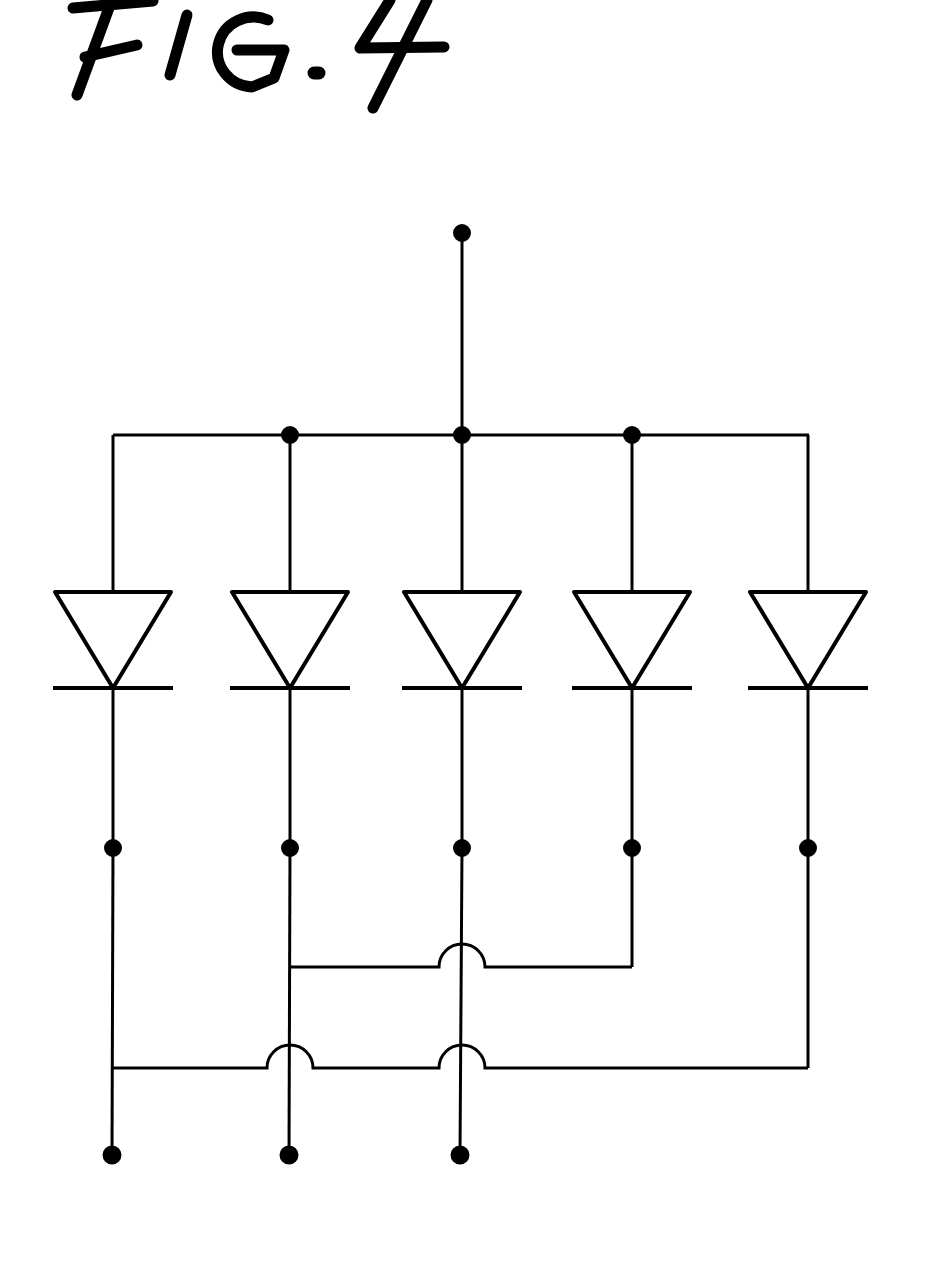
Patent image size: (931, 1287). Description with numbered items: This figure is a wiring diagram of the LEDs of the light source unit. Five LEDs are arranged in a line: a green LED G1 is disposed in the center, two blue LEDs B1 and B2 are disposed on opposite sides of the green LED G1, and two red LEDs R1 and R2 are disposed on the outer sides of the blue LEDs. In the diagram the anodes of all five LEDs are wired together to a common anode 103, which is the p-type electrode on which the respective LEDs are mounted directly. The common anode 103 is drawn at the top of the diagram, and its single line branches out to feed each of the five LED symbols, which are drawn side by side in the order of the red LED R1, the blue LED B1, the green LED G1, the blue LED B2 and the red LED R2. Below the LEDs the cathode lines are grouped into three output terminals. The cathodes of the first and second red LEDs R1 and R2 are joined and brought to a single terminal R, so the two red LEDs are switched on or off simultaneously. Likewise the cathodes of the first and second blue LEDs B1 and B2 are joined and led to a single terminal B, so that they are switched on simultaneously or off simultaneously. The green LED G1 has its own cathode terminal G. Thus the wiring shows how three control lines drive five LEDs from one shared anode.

The common anode 103 is at (619, 329).
The first red LED R1 is at (102, 645).
The first blue LED B1 is at (278, 645).
The green LED G1 is at (452, 645).
The second blue LED B2 is at (622, 645).
The second red LED R2 is at (796, 645).
The red cathode terminal R is at (117, 1038).
The green cathode terminal G is at (289, 1038).
The blue cathode terminal B is at (461, 1038).